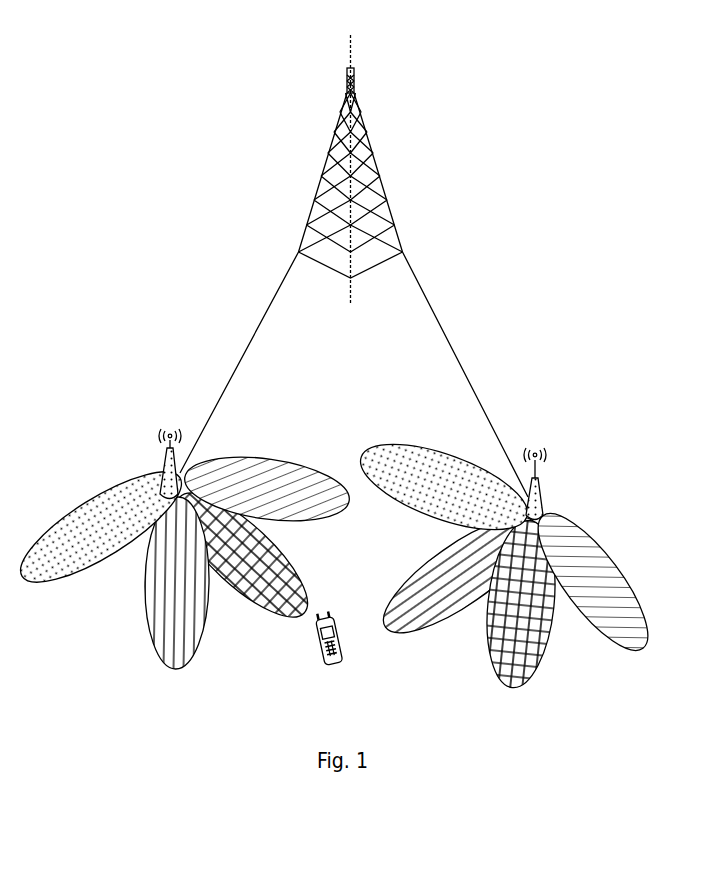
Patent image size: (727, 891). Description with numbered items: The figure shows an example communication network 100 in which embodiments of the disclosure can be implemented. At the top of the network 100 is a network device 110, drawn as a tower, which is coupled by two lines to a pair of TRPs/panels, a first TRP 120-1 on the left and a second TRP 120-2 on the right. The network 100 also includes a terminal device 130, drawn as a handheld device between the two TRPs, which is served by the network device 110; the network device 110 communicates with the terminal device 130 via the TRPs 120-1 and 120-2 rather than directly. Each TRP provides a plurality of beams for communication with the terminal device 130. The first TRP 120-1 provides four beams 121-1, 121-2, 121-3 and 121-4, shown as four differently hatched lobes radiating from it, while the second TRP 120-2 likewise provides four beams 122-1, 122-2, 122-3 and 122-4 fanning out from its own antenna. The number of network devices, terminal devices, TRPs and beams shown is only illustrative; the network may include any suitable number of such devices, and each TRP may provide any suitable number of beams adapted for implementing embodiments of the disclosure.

The communication network 100 is at (213, 122).
The network device 110 is at (375, 172).
The TRP/panel 120-1 is at (167, 470).
The TRP/panel 120-2 is at (533, 500).
The beam 121-1 is at (267, 489).
The beam 121-2 is at (241, 555).
The beam 121-3 is at (177, 582).
The beam 121-4 is at (101, 527).
The beam 122-1 is at (593, 582).
The beam 122-2 is at (520, 604).
The beam 122-3 is at (460, 575).
The beam 122-4 is at (443, 487).
The terminal device 130 is at (338, 657).